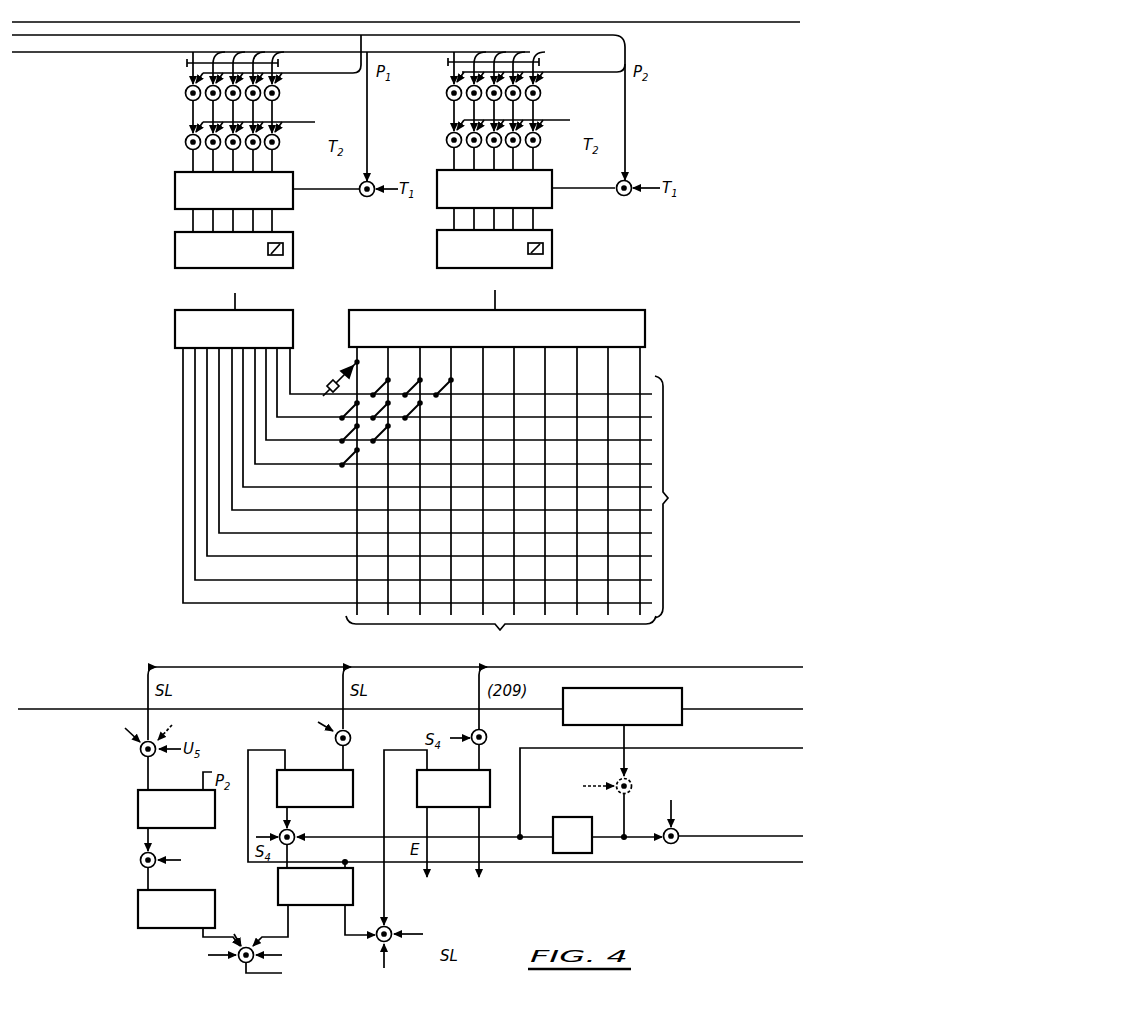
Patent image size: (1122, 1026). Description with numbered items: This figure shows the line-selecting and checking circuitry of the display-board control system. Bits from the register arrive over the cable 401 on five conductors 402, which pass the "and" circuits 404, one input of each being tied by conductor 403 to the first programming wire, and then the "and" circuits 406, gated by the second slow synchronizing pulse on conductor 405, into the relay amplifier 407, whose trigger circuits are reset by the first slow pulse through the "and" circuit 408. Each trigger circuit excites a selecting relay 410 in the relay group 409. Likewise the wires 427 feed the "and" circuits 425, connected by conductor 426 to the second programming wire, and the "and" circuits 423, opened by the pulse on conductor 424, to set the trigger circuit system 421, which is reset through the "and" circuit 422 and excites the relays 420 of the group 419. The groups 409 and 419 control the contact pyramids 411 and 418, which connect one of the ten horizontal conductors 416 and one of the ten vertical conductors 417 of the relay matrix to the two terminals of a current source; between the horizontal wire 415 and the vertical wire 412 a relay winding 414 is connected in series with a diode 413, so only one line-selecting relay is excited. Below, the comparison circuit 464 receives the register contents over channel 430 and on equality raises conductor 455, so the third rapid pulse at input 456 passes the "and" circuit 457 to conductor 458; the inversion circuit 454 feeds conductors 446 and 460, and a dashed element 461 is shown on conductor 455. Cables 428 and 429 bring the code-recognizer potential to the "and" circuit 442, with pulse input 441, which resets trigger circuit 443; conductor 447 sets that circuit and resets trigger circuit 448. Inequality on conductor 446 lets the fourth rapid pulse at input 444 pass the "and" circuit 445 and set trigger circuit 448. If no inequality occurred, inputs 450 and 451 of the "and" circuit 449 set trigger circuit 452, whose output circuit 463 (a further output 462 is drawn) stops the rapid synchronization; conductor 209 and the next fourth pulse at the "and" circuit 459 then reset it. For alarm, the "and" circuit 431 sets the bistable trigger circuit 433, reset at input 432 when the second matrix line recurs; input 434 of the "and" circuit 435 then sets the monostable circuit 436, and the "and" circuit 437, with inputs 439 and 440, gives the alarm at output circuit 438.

The conductor 209 is at (483, 698).
The cable 401 is at (271, 65).
The conductors 402 is at (209, 69).
The conductor 403 is at (278, 59).
The "and" circuits 404 is at (251, 77).
The conductor 405 is at (271, 123).
The "and" circuits 406 is at (210, 127).
The relay amplifier 407 is at (267, 191).
The "and" circuit 408 is at (371, 136).
The relay group 409 is at (234, 250).
The selecting relay 410 is at (283, 249).
The contact pyramid 411 is at (413, 448).
The vertical wire 412 is at (357, 612).
The diode 413 is at (356, 362).
The relay winding 414 is at (327, 386).
The horizontal wire 415 is at (643, 392).
The horizontal conductors 416 is at (679, 497).
The vertical conductors 417 is at (501, 635).
The contact pyramid 418 is at (497, 318).
The relay group 419 is at (494, 249).
The relays 420 is at (543, 248).
The trigger circuit system 421 is at (526, 189).
The "and" circuit 422 is at (633, 201).
The "and" circuits 423 is at (472, 126).
The conductor 424 is at (529, 121).
The "and" circuits 425 is at (512, 77).
The conductor 426 is at (541, 71).
The wires 427 is at (470, 68).
The cable 428 is at (318, 107).
The cable 429 is at (479, 656).
The channel 430 is at (410, 700).
The "and" circuit 431 is at (140, 713).
The input 432 is at (220, 771).
The bistable trigger circuit 433 is at (176, 804).
The input circuit 434 is at (195, 862).
The "and" circuit 435 is at (126, 861).
The monostable trigger circuit 436 is at (189, 907).
The "and" circuit 437 is at (238, 940).
The output circuit 438 is at (275, 976).
The input circuit 439 is at (201, 956).
The input circuit 440 is at (279, 957).
The input 441 is at (294, 723).
The "and" circuit 442 is at (361, 707).
The trigger circuit 443 is at (315, 787).
The input circuit 444 is at (272, 830).
The "and" circuit 445 is at (306, 855).
The conductor 446 is at (409, 828).
The conductor 447 is at (556, 856).
The trigger circuit 448 is at (525, 848).
The "and" circuit 449 is at (391, 928).
The input circuit 450 is at (424, 937).
The input circuit 451 is at (395, 968).
The trigger circuit 452 is at (437, 835).
The inversion circuit 454 is at (556, 835).
The conductor 455 is at (628, 757).
The input circuit 456 is at (701, 810).
The "and" circuit 457 is at (670, 845).
The conductor 458 is at (734, 843).
The "and" circuit 459 is at (486, 739).
The conductor 460 is at (661, 782).
The gate 461 is at (624, 808).
The output 462 is at (482, 854).
The output circuit 463 is at (419, 854).
The comparison circuit 464 is at (622, 706).